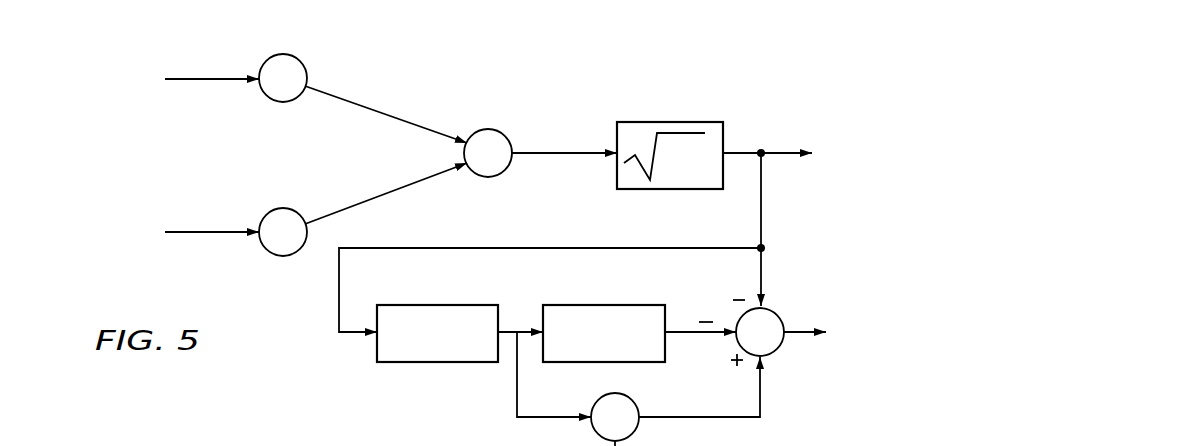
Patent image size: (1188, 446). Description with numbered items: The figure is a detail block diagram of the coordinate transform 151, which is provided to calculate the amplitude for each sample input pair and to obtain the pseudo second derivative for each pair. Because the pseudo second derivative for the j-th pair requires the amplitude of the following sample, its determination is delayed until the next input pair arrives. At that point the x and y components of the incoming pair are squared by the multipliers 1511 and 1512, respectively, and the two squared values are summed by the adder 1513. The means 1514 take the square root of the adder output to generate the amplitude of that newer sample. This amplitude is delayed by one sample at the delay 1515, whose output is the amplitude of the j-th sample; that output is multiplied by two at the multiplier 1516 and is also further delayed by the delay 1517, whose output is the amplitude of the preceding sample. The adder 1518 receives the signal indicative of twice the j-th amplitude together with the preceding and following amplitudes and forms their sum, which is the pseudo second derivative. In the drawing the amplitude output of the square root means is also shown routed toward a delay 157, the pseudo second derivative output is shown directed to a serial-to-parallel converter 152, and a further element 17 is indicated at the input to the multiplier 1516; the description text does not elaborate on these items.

The coordinate transform 151 is at (768, 62).
The multiplier 1511 is at (298, 62).
The multiplier 1512 is at (298, 214).
The adder 1513 is at (500, 175).
The square root means 1514 is at (672, 122).
The delay 1515 is at (438, 305).
The multiplier 1516 is at (634, 401).
The delay 1517 is at (586, 305).
The adder 1518 is at (775, 354).
The delay 157 is at (879, 159).
The serial-to-parallel converter 152 is at (1020, 333).
The coefficient source 17 is at (1010, 445).